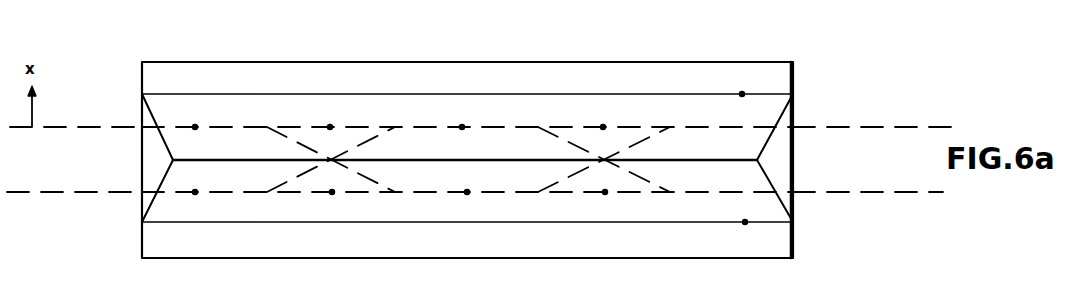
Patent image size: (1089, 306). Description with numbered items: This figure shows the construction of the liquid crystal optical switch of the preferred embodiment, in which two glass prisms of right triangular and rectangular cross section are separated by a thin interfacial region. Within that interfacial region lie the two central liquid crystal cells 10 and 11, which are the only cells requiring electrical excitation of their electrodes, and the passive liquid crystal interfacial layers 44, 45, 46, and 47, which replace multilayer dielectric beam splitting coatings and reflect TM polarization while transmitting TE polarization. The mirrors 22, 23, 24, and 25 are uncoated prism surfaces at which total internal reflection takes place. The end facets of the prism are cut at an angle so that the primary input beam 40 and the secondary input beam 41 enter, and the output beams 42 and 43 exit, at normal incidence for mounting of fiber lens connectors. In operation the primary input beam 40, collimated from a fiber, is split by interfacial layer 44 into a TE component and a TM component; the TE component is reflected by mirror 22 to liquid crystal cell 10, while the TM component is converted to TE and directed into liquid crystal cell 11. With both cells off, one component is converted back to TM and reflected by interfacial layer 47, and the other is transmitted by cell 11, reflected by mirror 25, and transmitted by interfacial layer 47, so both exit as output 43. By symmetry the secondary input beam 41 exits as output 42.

The liquid crystal cell 10 is at (462, 127).
The liquid crystal cell 11 is at (467, 192).
The mirror 22 is at (330, 127).
The mirror 23 is at (332, 192).
The mirror 24 is at (603, 127).
The mirror 25 is at (605, 192).
The primary input beam 40 is at (127, 128).
The secondary input beam 41 is at (127, 193).
The output beam 42 is at (902, 128).
The output beam 43 is at (915, 193).
The liquid crystal interfacial layer 44 is at (195, 127).
The liquid crystal interfacial layer 45 is at (195, 192).
The liquid crystal interfacial layer 46 is at (742, 94).
The liquid crystal interfacial layer 47 is at (745, 222).